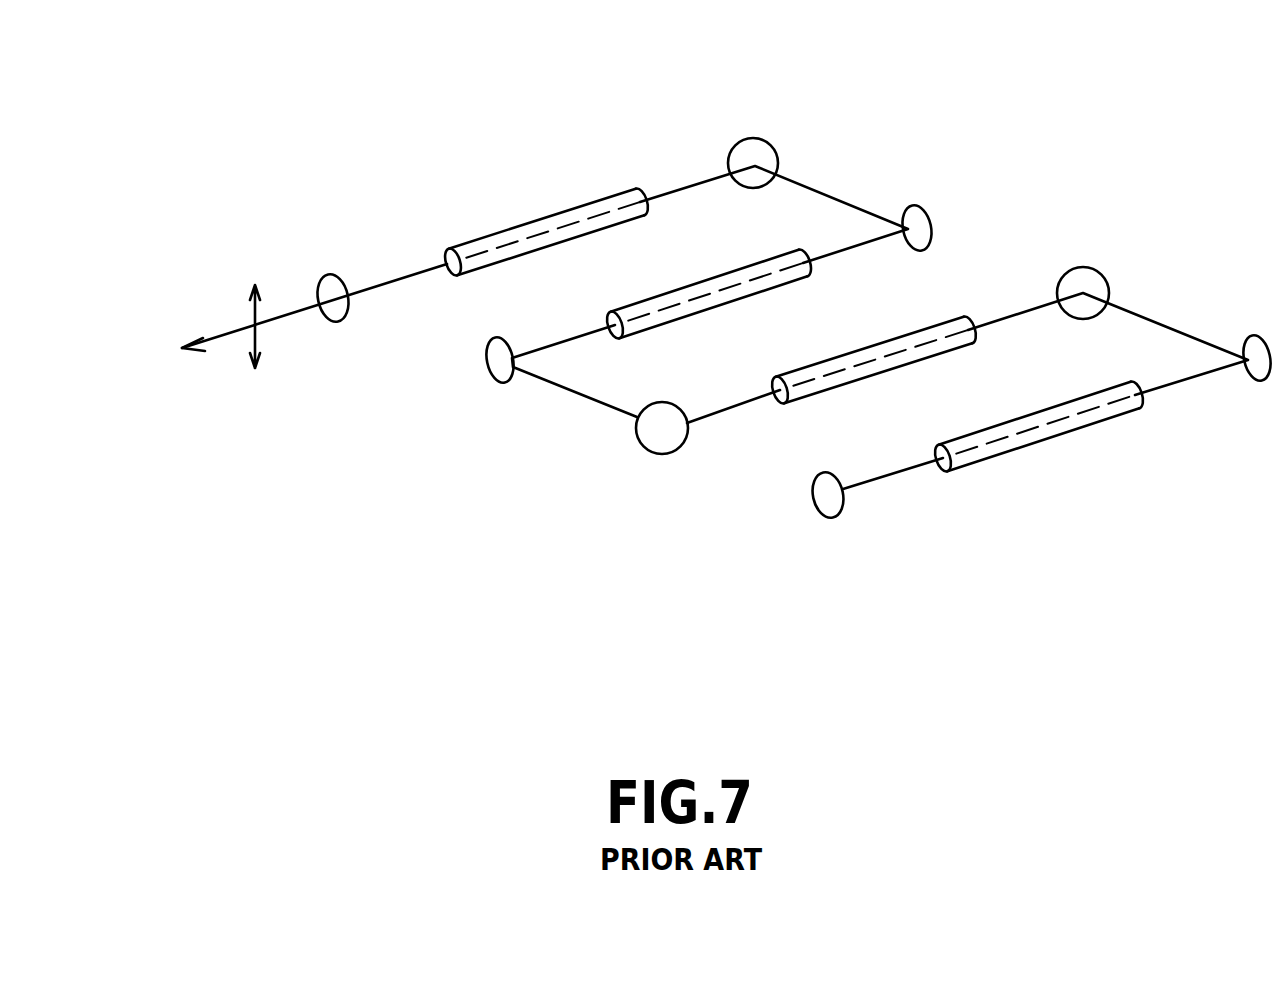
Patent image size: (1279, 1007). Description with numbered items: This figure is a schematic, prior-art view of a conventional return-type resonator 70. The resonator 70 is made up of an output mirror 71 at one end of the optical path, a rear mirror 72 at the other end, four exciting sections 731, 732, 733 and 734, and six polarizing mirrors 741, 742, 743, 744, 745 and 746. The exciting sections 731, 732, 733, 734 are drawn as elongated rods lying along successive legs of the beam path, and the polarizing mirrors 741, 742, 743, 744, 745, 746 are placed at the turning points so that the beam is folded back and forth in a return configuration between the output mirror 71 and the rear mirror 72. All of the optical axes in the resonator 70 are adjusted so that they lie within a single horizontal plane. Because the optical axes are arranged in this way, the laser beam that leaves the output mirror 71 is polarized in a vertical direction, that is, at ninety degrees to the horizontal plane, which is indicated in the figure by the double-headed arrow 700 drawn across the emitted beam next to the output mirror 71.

The resonator 70 is at (1112, 153).
The arrow 700 is at (248, 335).
The output mirror 71 is at (327, 277).
The rear mirror 72 is at (845, 508).
The exciting section 731 is at (488, 232).
The exciting section 732 is at (692, 283).
The exciting section 733 is at (878, 342).
The exciting section 734 is at (993, 427).
The polarizing mirror 741 is at (755, 138).
The polarizing mirror 742 is at (922, 207).
The polarizing mirror 743 is at (502, 383).
The polarizing mirror 744 is at (658, 453).
The polarizing mirror 745 is at (1087, 268).
The polarizing mirror 746 is at (1257, 382).